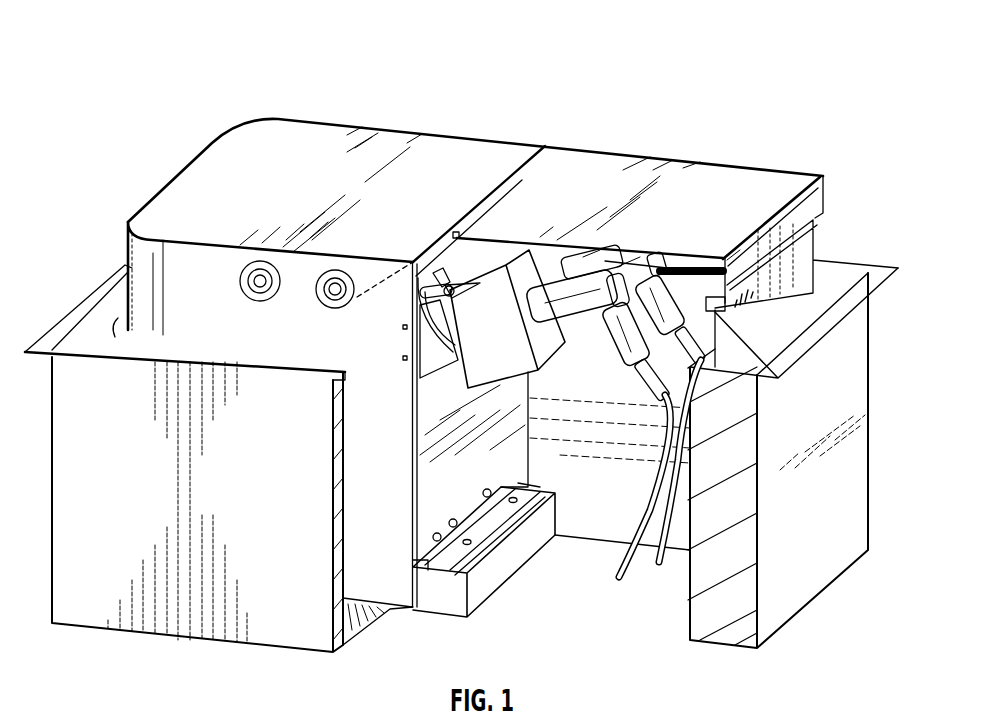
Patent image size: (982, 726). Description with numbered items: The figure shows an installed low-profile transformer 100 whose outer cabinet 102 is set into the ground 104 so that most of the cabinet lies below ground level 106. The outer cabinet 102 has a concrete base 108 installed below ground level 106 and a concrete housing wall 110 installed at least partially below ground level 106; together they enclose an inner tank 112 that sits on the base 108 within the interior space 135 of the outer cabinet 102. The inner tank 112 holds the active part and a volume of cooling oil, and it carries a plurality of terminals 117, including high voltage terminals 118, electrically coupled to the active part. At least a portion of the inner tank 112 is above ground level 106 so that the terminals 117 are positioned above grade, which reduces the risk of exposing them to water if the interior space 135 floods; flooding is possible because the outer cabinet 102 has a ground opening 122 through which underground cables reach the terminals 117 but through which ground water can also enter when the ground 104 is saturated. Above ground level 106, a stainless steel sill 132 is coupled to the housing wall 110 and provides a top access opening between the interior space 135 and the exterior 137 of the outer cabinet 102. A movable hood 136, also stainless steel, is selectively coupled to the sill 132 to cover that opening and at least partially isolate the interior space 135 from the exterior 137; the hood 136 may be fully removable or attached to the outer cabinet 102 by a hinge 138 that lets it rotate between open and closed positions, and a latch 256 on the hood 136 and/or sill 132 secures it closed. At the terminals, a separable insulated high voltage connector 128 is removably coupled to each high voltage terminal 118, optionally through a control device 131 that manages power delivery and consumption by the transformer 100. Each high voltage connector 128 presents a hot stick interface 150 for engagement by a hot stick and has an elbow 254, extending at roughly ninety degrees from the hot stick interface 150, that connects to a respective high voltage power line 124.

The low-profile transformer 100 is at (170, 86).
The outer cabinet 102 is at (80, 390).
The ground 104 is at (606, 692).
The ground level 106 is at (888, 257).
The base 108 is at (363, 620).
The housing wall 110 is at (345, 535).
The inner tank 112 is at (147, 268).
The terminals 117 is at (461, 268).
The high voltage terminals 118 is at (427, 333).
The ground opening 122 is at (562, 614).
The high voltage power line 124 is at (677, 513).
The separable insulated high voltage connector 128 is at (587, 262).
The control device 131 is at (471, 350).
The sill 132 is at (803, 253).
The interior space 135 is at (570, 478).
The movable hood 136 is at (730, 175).
The exterior 137 is at (691, 115).
The hinge 138 is at (458, 233).
The hot stick interface 150 is at (660, 253).
The elbow 254 is at (792, 173).
The latch 256 is at (722, 315).